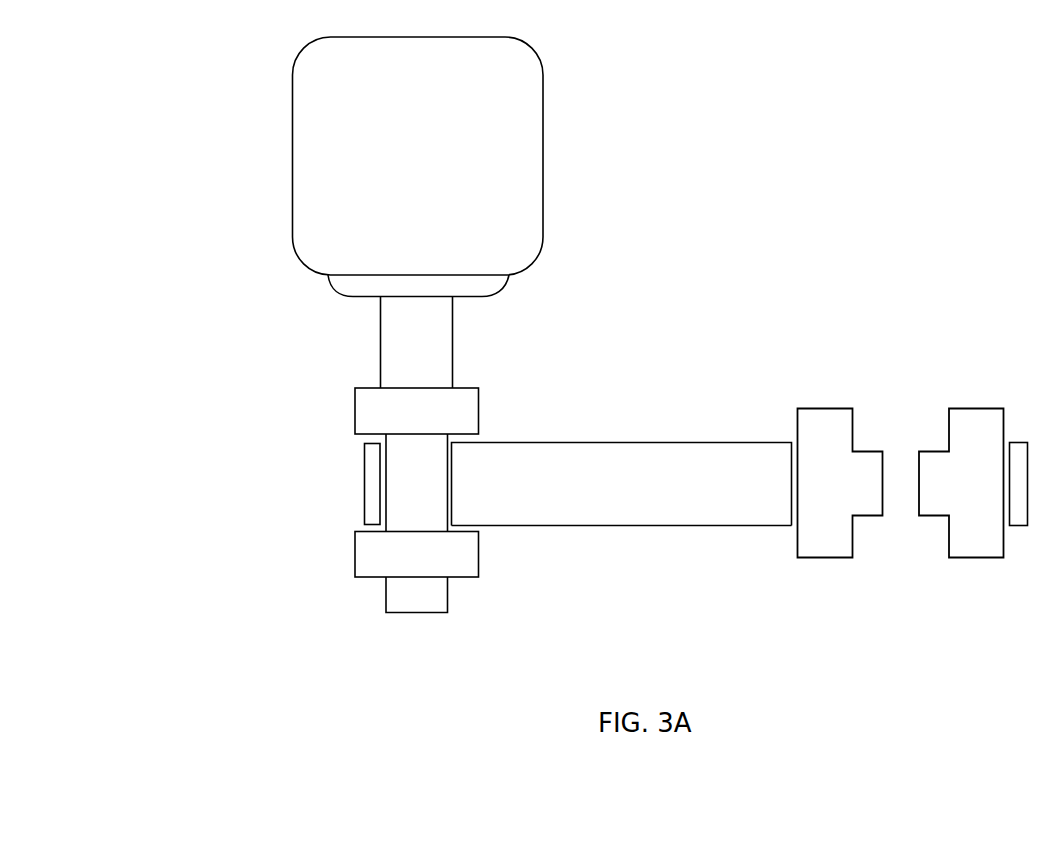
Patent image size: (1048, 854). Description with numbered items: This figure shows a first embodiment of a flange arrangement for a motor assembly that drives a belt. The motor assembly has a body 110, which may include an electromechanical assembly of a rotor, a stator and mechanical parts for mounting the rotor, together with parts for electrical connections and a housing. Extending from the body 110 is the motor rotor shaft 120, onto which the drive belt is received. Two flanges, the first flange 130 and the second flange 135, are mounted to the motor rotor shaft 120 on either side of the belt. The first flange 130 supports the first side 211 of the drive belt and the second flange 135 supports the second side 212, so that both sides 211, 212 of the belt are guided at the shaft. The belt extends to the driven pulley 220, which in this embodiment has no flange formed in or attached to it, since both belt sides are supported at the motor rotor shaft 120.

The body 110 is at (293, 160).
The motor rotor shaft 120 is at (380, 344).
The first flange 130 is at (355, 402).
The second flange 135 is at (355, 558).
The first side 211 is at (601, 442).
The second side 212 is at (602, 526).
The driven pulley 220 is at (913, 367).